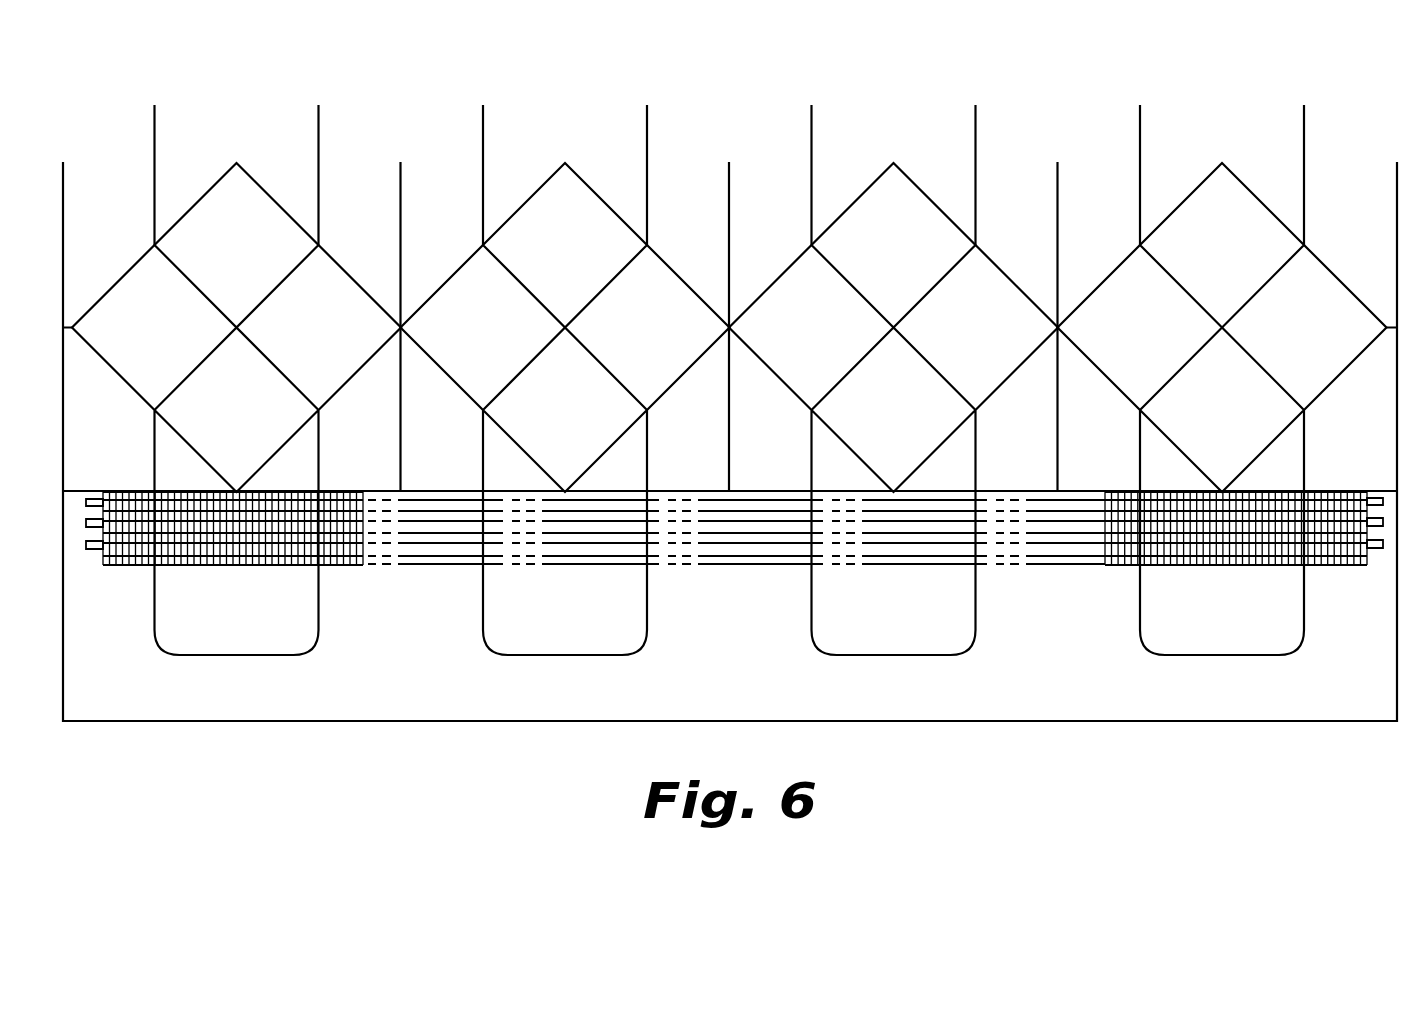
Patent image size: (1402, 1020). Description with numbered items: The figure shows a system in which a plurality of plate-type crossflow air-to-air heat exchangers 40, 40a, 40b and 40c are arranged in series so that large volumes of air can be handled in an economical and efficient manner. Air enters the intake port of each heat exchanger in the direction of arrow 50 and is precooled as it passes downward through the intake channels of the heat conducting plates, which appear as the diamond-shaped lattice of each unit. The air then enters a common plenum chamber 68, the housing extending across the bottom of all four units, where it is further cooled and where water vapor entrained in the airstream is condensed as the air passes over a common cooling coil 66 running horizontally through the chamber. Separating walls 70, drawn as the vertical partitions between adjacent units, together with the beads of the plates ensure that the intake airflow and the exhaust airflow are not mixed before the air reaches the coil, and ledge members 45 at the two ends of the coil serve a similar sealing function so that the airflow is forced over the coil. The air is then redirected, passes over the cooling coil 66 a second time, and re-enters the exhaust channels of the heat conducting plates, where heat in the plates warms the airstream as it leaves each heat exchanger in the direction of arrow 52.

The heat exchanger 40 is at (118, 256).
The heat exchanger 40a is at (452, 254).
The heat exchanger 40b is at (780, 254).
The heat exchanger 40c is at (1110, 252).
The arrow indicating intake airflow direction 50 is at (1165, 112).
The arrow indicating exhaust airflow direction 52 is at (1325, 112).
The separating wall 70 is at (1087, 448).
The ledge member 45 is at (1377, 488).
The cooling coil 66 is at (410, 565).
The plenum chamber 68 is at (1117, 685).